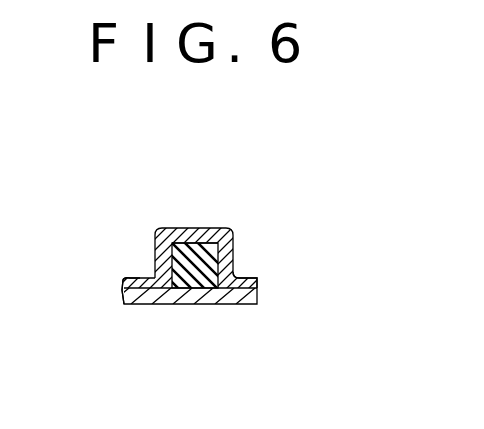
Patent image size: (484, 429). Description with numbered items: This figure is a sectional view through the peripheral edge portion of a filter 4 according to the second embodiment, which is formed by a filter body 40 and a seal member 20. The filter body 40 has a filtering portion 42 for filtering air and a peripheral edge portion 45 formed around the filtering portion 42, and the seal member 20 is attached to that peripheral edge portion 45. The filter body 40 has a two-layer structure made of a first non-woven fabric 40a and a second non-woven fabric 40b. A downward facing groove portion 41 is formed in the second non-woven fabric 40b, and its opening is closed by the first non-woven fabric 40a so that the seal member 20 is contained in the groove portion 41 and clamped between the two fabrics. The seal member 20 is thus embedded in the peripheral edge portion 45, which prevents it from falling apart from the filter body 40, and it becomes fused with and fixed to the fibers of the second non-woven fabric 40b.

The filter 4 is at (185, 187).
The filter body 40 is at (123, 205).
The groove portion 41 is at (219, 253).
The filtering portion 42 is at (136, 275).
The peripheral edge portion 45 is at (209, 232).
The first non-woven fabric 40a is at (253, 297).
The second non-woven fabric 40b is at (257, 287).
The seal member 20 is at (203, 278).